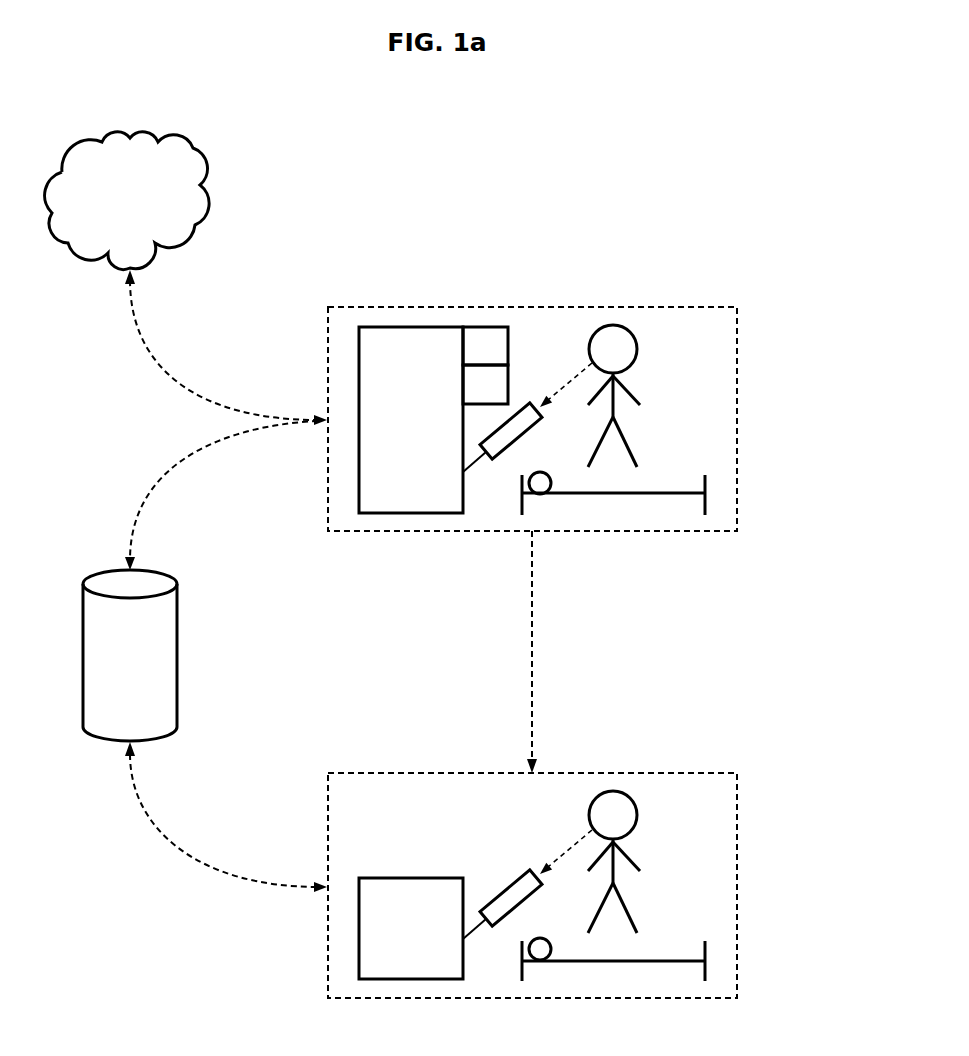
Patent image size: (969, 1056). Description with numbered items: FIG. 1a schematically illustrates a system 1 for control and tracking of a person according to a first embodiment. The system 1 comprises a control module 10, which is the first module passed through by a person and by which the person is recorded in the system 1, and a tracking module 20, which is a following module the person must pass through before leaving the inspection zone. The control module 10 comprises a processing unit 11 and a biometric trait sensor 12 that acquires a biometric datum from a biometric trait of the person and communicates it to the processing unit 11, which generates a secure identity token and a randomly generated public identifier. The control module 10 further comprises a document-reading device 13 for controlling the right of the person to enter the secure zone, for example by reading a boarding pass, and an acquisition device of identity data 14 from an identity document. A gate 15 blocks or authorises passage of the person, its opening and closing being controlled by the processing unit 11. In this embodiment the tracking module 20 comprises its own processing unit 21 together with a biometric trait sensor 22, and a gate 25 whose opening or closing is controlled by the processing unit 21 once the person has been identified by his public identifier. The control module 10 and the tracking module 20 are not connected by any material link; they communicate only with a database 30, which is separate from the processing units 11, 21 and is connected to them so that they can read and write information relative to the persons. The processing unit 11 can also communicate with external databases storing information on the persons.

The system 1 is at (796, 667).
The control module 10 is at (744, 420).
The processing unit 11 is at (399, 430).
The biometric trait sensor 12 is at (485, 456).
The document-reading device 13 is at (473, 358).
The acquisition device of identity data 14 is at (473, 396).
The gate 15 is at (610, 494).
The tracking module 20 is at (744, 887).
The processing unit 21 is at (397, 940).
The biometric trait sensor 22 is at (485, 923).
The gate 25 is at (610, 962).
The database 30 is at (117, 655).